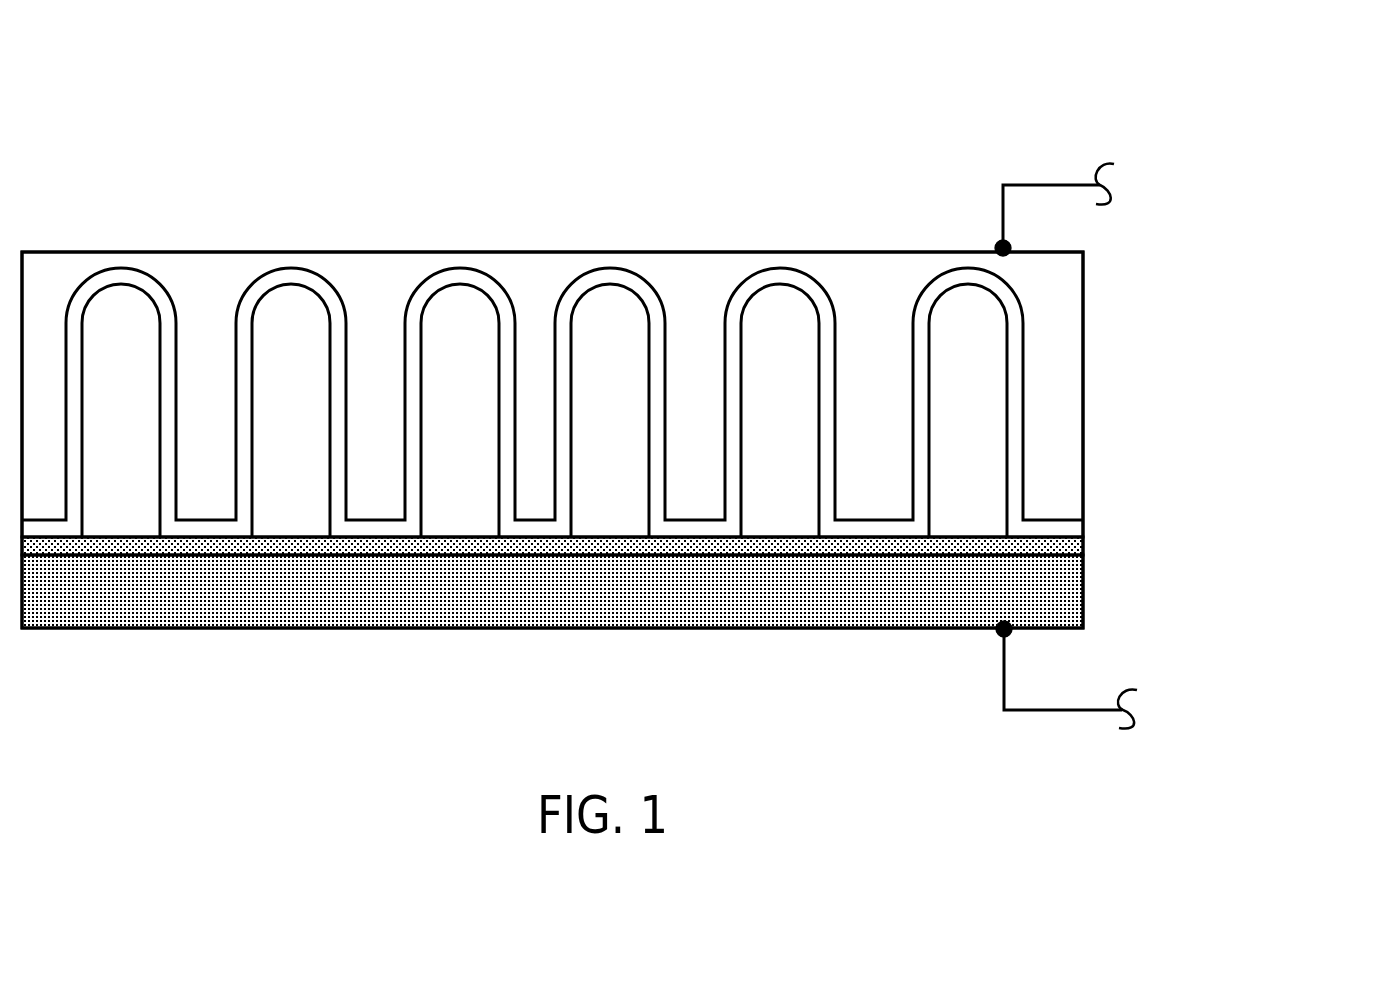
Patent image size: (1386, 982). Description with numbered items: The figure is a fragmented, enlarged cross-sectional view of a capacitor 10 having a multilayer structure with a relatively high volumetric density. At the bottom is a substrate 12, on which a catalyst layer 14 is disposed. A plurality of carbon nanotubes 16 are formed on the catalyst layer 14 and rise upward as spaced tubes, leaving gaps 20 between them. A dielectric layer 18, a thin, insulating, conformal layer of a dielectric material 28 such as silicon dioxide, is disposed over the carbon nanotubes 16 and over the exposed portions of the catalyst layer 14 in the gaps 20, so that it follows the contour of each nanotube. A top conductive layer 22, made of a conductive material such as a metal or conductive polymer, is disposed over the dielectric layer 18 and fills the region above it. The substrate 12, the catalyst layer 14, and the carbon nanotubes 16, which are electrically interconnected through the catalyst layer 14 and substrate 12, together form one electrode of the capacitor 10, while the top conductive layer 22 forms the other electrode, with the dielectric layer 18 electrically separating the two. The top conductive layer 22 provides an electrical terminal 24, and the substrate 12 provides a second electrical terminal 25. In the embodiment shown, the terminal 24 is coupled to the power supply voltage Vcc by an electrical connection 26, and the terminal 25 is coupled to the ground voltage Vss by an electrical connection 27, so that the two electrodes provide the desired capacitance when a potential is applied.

The capacitor 10 is at (553, 210).
The substrate 12 is at (1047, 634).
The catalyst layer 14 is at (1069, 532).
The carbon nanotubes (CNTs) 16 is at (977, 416).
The dielectric layer 18 is at (1034, 303).
The gaps 20 is at (698, 483).
The top conductive layer 22 is at (1066, 432).
The electrical terminal 24 is at (953, 252).
The second electrical terminal 25 is at (990, 630).
The electrical connection 26 is at (1043, 183).
The electrical connection 27 is at (1050, 712).
The dielectric material 28 is at (793, 270).